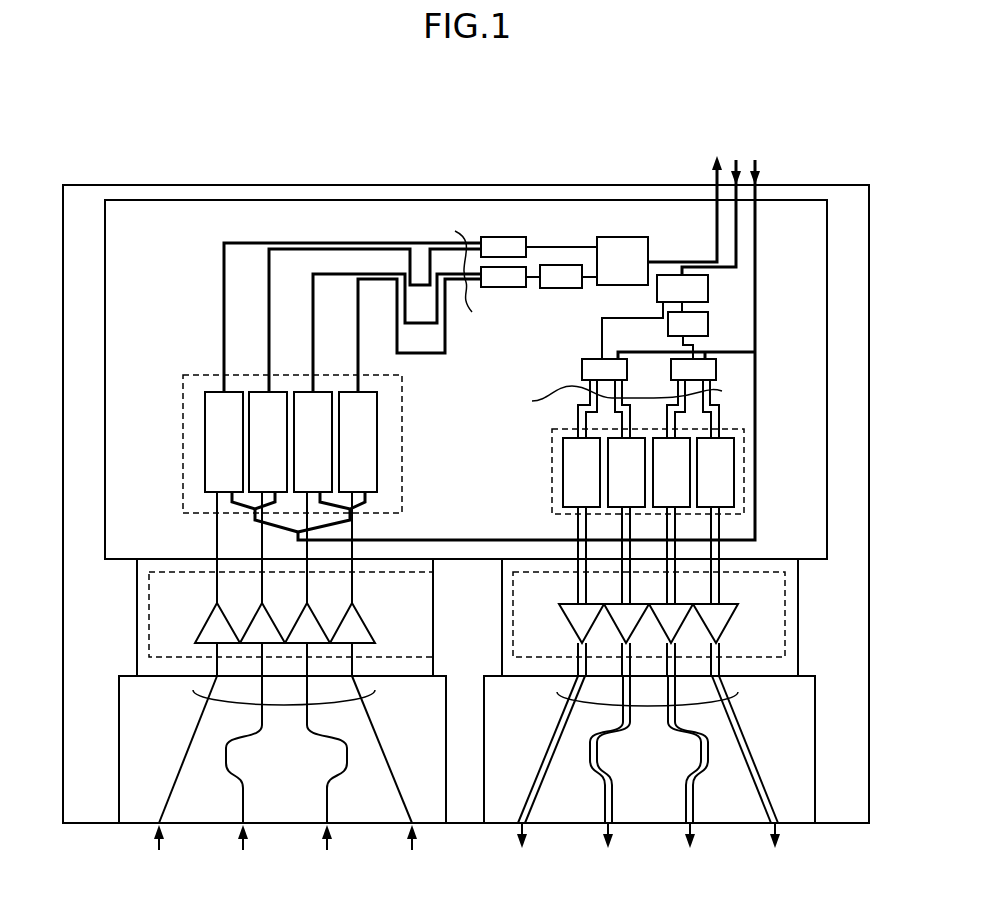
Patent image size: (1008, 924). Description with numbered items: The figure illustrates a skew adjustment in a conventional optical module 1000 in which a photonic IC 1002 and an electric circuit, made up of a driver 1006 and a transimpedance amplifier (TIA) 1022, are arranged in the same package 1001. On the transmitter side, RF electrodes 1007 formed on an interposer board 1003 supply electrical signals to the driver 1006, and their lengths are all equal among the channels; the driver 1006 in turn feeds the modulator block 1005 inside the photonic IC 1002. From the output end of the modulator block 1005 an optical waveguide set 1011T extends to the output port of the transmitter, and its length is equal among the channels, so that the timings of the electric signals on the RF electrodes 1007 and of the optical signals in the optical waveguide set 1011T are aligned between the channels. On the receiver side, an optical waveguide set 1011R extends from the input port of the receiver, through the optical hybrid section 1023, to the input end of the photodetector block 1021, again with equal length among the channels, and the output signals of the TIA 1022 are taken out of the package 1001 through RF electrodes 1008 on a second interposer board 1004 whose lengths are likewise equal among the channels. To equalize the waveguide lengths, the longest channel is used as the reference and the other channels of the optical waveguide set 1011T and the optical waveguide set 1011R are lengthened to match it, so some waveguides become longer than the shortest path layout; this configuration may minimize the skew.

The optical module 1000 is at (864, 123).
The package 1001 is at (188, 185).
The photonic IC 1002 is at (800, 200).
The interposer board 1003 is at (127, 676).
The interposer board 1004 is at (813, 676).
The modulator block 1005 is at (183, 432).
The driver 1006 is at (149, 620).
The RF electrodes 1007 is at (207, 685).
The RF electrodes 1008 is at (567, 685).
The optical waveguide set 1011T is at (494, 277).
The optical waveguide set 1011R is at (598, 397).
The photodetector block 1021 is at (744, 475).
The transimpedance amplifier (TIA) 1022 is at (785, 618).
The 90-degree optical hybrids 1023 is at (716, 370).